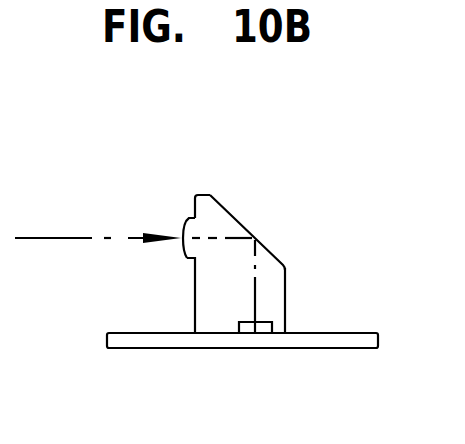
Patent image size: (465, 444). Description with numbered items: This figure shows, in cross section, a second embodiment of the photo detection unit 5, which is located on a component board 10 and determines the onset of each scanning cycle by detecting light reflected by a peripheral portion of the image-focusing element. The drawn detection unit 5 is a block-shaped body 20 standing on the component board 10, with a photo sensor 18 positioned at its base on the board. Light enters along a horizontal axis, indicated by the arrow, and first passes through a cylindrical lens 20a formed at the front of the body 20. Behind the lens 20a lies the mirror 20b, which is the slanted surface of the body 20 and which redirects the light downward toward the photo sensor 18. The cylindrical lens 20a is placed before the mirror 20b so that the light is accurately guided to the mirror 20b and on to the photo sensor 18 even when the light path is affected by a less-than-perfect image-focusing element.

The detection unit 5 is at (221, 212).
The component board 10 is at (158, 342).
The photo sensor 18 is at (257, 328).
The holding block 20 is at (221, 234).
The cylindrical lens 20a is at (187, 222).
The mirror 20b is at (241, 228).